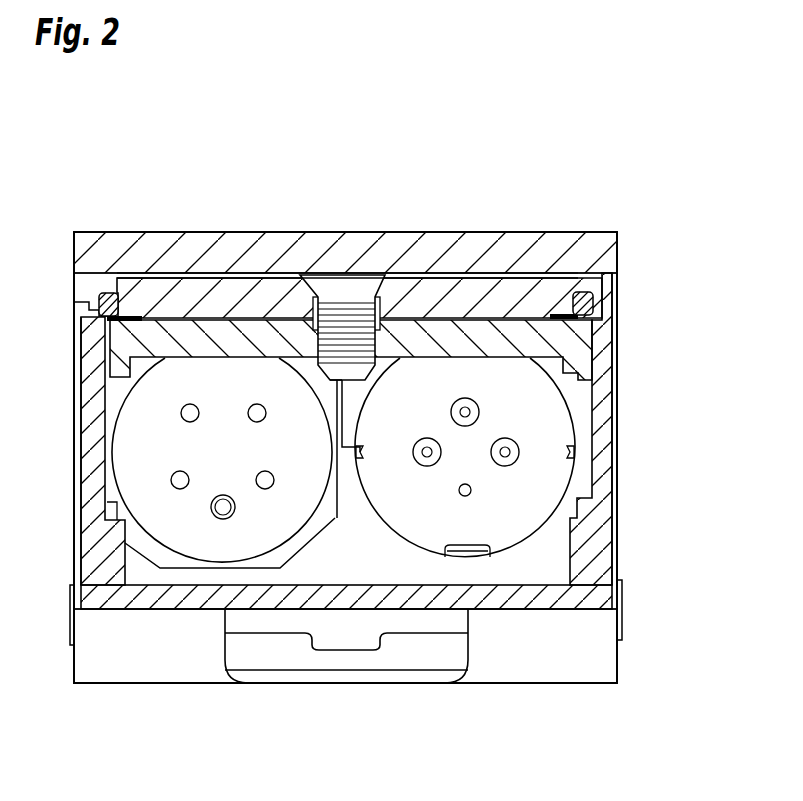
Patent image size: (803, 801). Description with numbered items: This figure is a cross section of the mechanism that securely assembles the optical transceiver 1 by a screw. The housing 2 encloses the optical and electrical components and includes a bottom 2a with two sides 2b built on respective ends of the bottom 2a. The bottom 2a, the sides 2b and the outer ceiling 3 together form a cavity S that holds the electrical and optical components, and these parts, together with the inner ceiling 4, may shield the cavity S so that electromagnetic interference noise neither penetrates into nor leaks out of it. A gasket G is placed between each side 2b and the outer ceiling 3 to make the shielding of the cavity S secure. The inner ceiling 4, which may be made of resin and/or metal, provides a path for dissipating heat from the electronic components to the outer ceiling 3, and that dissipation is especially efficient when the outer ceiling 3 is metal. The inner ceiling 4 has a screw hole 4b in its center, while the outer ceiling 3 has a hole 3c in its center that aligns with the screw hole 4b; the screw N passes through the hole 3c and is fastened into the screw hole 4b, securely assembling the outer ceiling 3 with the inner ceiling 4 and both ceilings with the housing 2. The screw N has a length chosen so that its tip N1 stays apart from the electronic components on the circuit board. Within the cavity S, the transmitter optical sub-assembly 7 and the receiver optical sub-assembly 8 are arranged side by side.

The optical transceiver 1 is at (538, 125).
The housing 2 is at (622, 368).
The bottom 2a is at (290, 609).
The sides 2b is at (80, 430).
The outer ceiling 3 is at (623, 279).
The hole 3c is at (340, 342).
The inner ceiling 4 is at (99, 350).
The screw hole 4b is at (344, 338).
The gasket G is at (99, 299).
The screw N is at (372, 270).
The tip N1 is at (352, 387).
The cavity S is at (350, 414).
The transmitter optical sub-assembly 7 is at (135, 487).
The receiver optical sub-assembly 8 is at (553, 480).